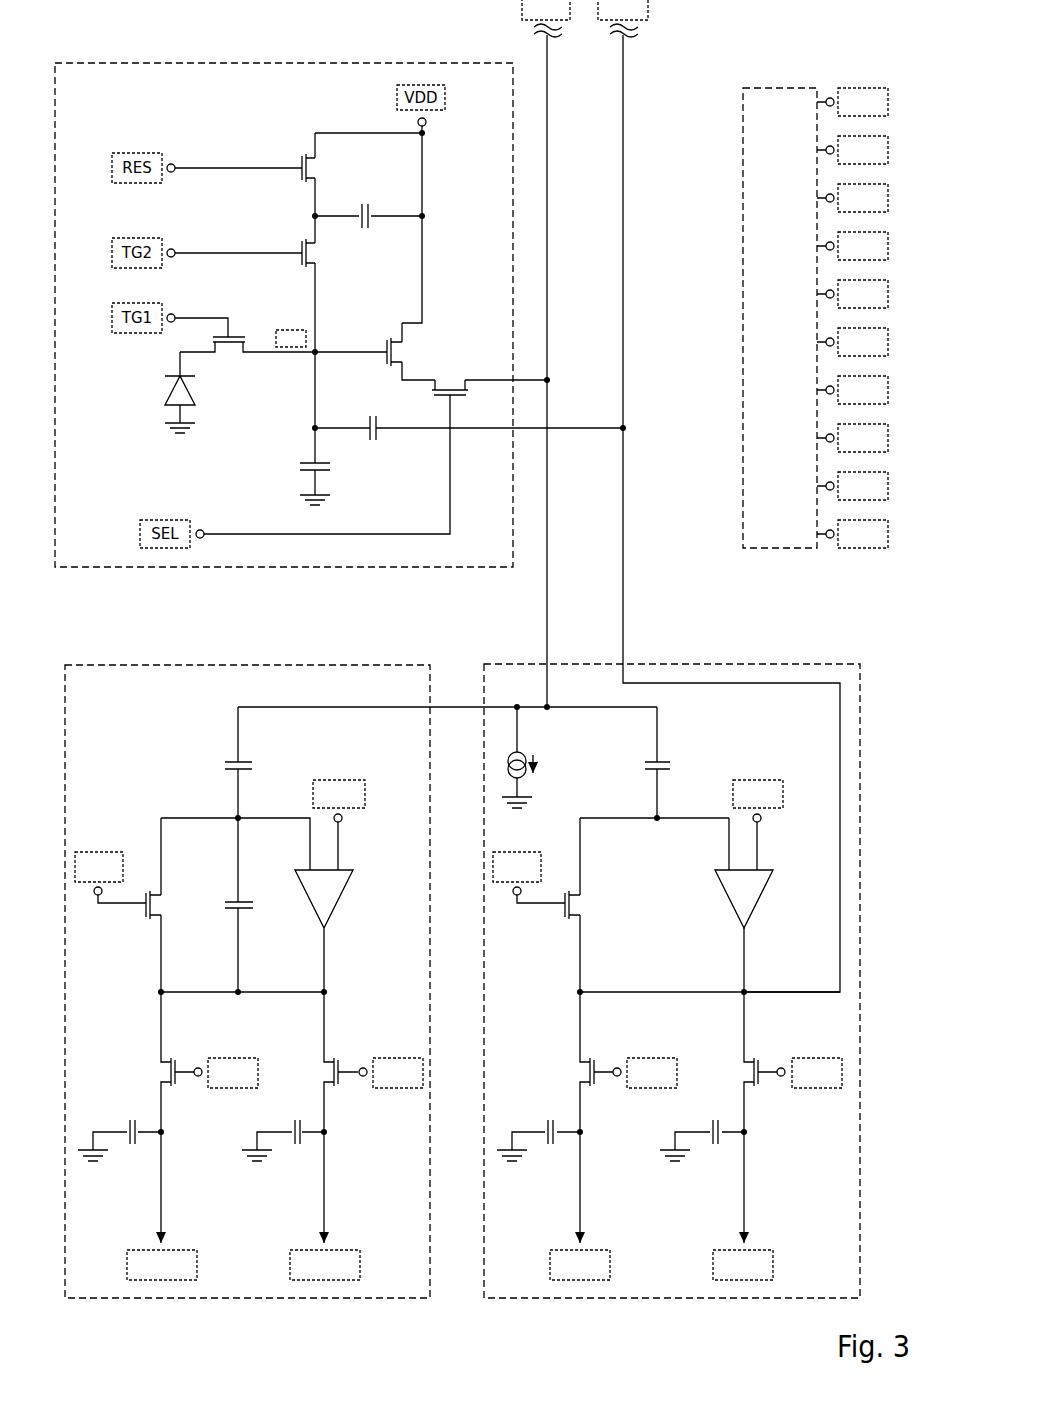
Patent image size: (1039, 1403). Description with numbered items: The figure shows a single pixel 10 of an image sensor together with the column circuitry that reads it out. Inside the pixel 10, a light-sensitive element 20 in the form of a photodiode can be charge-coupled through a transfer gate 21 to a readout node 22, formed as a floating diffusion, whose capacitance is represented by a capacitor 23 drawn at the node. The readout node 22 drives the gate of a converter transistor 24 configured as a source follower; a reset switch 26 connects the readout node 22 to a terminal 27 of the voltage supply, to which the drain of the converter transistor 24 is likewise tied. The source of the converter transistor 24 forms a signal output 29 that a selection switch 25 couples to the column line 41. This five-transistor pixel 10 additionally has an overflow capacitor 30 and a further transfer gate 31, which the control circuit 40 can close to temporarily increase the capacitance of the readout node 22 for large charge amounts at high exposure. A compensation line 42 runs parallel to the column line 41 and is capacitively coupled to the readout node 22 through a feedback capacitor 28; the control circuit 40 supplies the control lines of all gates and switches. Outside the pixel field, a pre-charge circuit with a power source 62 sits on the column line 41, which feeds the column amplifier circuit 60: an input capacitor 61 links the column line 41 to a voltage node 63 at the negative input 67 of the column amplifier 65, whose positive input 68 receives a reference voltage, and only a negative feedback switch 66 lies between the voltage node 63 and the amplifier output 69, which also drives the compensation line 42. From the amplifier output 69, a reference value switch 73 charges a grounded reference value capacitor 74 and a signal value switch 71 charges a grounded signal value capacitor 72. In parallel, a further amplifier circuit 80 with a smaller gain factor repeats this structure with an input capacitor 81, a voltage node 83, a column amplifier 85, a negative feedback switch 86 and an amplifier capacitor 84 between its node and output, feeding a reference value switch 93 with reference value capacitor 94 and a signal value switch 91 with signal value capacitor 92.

The pixel 10 is at (157, 60).
The light-sensitive element 20 is at (164, 388).
The transfer gate 21 is at (238, 334).
The readout node 22 is at (309, 357).
The floating diffusion capacitor 23 is at (296, 467).
The converter transistor 24 is at (384, 342).
The selection switch 25 is at (452, 380).
The reset switch 26 is at (297, 152).
The terminal of voltage supply 27 is at (429, 138).
The feedback capacitor 28 is at (383, 437).
The signal output 29 is at (420, 370).
The overflow capacitor 30 is at (372, 233).
The further transfer gate 31 is at (297, 248).
The control circuit 40 is at (809, 82).
The column line 41 is at (554, 138).
The compensation line 42 is at (634, 138).
The column amplifier circuit 60 is at (740, 657).
The input capacitor 61 is at (678, 766).
The power source 62 is at (540, 770).
The voltage node 63 is at (654, 825).
The column amplifier 65 is at (763, 908).
The negative feedback switch 66 is at (566, 927).
The negative input 67 is at (724, 868).
The positive input 68 is at (766, 868).
The amplifier output 69 is at (739, 934).
The signal value switch 71 is at (768, 1052).
The signal value capacitor 72 is at (716, 1152).
The reference value switch 73 is at (603, 1052).
The reference value capacitor 74 is at (551, 1152).
The further amplifier circuit 80 is at (212, 657).
The input capacitor 81 is at (259, 766).
The voltage node 83 is at (235, 825).
The amplifier capacitor 84 is at (249, 913).
The column amplifier 85 is at (343, 908).
The negative feedback switch 86 is at (147, 927).
The signal value switch 91 is at (347, 1052).
The signal value capacitor 92 is at (297, 1152).
The reference value switch 93 is at (184, 1052).
The reference value capacitor 94 is at (133, 1152).